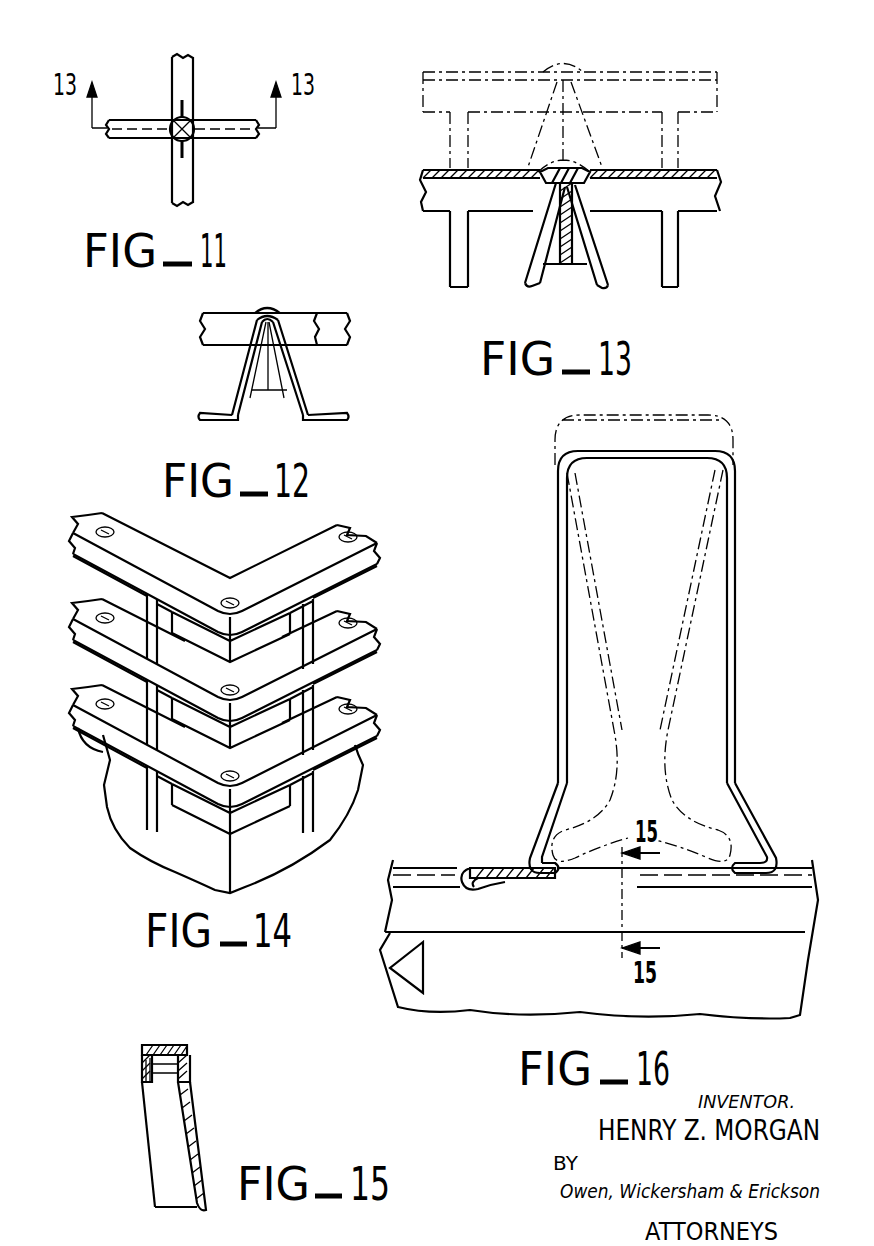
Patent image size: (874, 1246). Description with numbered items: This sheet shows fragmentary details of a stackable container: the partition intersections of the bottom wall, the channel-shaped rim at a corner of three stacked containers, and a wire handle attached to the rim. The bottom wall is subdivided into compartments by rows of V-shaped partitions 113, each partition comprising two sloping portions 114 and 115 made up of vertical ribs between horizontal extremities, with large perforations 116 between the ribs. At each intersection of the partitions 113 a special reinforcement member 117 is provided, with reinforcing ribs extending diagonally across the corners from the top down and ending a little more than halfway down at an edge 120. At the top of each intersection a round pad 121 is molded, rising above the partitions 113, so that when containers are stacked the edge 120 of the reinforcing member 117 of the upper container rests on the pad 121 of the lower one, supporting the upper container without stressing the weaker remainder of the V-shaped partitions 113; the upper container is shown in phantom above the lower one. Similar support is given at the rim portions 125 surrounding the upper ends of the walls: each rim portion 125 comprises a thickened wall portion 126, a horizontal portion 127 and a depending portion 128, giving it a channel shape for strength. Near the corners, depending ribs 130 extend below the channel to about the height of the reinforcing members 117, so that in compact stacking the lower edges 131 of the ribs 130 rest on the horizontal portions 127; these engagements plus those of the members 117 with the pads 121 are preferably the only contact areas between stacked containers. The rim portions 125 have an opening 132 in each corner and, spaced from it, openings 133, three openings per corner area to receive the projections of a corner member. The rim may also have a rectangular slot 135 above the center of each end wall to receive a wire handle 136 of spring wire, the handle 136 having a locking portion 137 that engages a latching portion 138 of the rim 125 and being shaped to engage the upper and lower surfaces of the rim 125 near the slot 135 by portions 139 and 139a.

In FIG. 11, the V-shaped partition 113 is at (188, 180).
In FIG. 12, the V-shaped partition 113 is at (285, 322).
In FIG. 13, the V-shaped partition 113 is at (640, 172).
In FIG. 12, the sloping portion 114 is at (250, 400).
In FIG. 13, the sloping portion 114 is at (538, 242).
In FIG. 12, the sloping portion 115 is at (306, 392).
In FIG. 13, the sloping portion 115 is at (600, 248).
In FIG. 12, the perforation 116 is at (275, 368).
In FIG. 11, the reinforcement member 117 is at (176, 140).
In FIG. 12, the reinforcement member 117 is at (258, 400).
In FIG. 13, the reinforcement member 117 is at (555, 148).
In FIG. 13, the edge 120 is at (574, 184).
In FIG. 11, the round pad 121 is at (190, 118).
In FIG. 12, the round pad 121 is at (268, 311).
In FIG. 13, the round pad 121 is at (570, 62).
In FIG. 14, the rim portion 125 is at (277, 573).
In FIG. 15, the rim portion 125 is at (176, 1044).
In FIG. 15, the thickened wall portion 126 is at (191, 1110).
In FIG. 14, the horizontal portion 127 is at (160, 553).
In FIG. 15, the horizontal portion 127 is at (152, 1044).
In FIG. 15, the depending portion 128 is at (146, 1072).
In FIG. 14, the depending rib 130 is at (150, 640).
In FIG. 15, the depending rib 130 is at (165, 1142).
In FIG. 14, the lower edge 131 is at (155, 660).
In FIG. 15, the lower edge 131 is at (157, 1208).
In FIG. 14, the opening 132 is at (230, 598).
In FIG. 14, the opening 133 is at (352, 532).
In FIG. 15, the opening 133 is at (166, 1045).
In FIG. 16, the rectangular slot 135 is at (560, 874).
In FIG. 16, the wire handle 136 is at (690, 665).
In FIG. 16, the locking portion 137 is at (474, 886).
In FIG. 16, the latching portion 138 is at (502, 867).
In FIG. 16, the portion 139 is at (527, 856).
In FIG. 16, the portion 139a is at (540, 880).